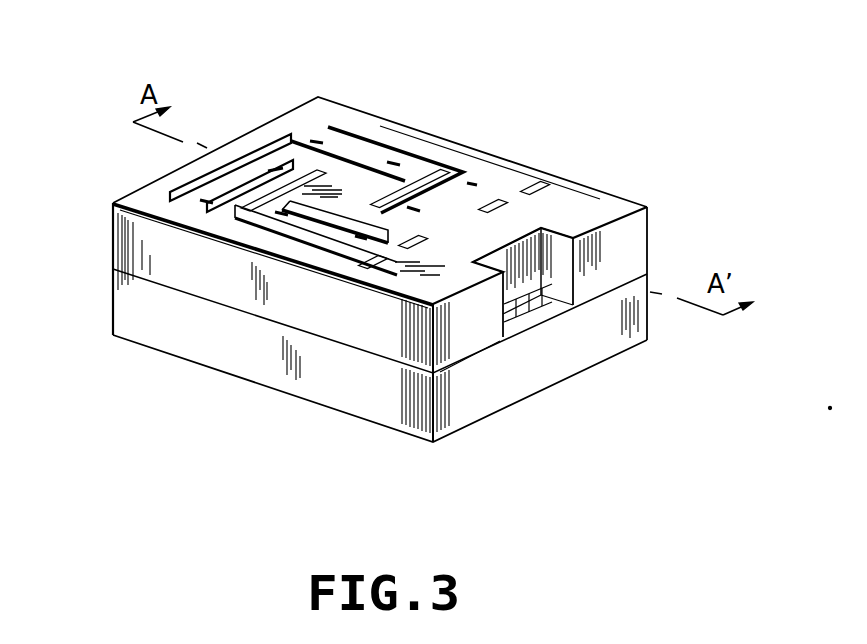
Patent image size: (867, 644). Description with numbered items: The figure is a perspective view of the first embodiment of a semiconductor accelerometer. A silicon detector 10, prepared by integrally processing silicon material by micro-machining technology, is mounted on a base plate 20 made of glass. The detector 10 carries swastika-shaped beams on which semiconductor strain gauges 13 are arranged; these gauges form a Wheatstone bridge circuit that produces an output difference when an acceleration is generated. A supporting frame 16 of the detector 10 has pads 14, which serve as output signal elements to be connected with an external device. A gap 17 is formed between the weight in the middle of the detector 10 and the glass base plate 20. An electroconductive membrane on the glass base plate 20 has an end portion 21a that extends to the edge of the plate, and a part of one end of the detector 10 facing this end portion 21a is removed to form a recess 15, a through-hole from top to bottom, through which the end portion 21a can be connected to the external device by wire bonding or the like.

The silicon detector 10 is at (114, 238).
The glass base plate 20 is at (113, 277).
The semiconductor strain gauges 13 is at (312, 139).
The pads 14 is at (490, 202).
The recess 15 is at (572, 237).
The supporting frame 16 is at (287, 253).
The gap 17 is at (467, 358).
The end portion 21a is at (538, 318).